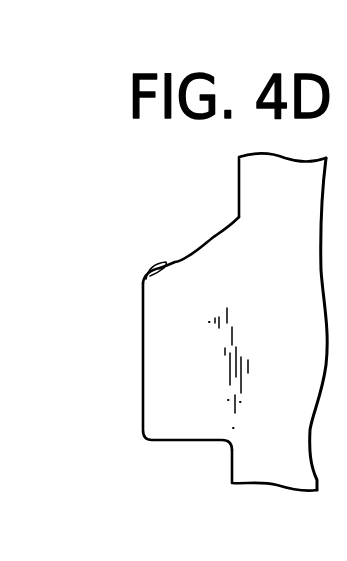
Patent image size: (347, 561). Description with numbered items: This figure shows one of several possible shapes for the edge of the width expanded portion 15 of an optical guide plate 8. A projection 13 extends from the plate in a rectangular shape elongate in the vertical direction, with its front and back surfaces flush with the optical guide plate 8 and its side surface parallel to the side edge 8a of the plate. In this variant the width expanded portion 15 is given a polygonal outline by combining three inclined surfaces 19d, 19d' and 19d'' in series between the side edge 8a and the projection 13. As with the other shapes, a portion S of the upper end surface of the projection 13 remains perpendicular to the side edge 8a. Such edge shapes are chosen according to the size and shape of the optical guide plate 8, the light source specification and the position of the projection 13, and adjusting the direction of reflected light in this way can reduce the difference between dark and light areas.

The optical guide plate 8 is at (247, 458).
The side edge of the optical guide plate 8a is at (239, 173).
The projection 13 is at (170, 358).
The width expanded portion 15 is at (233, 227).
The inclined surface 19d is at (198, 207).
The inclined surface 19d' is at (176, 229).
The inclined surface 19d'' is at (144, 247).
The portion perpendicular to the side edge S is at (147, 281).